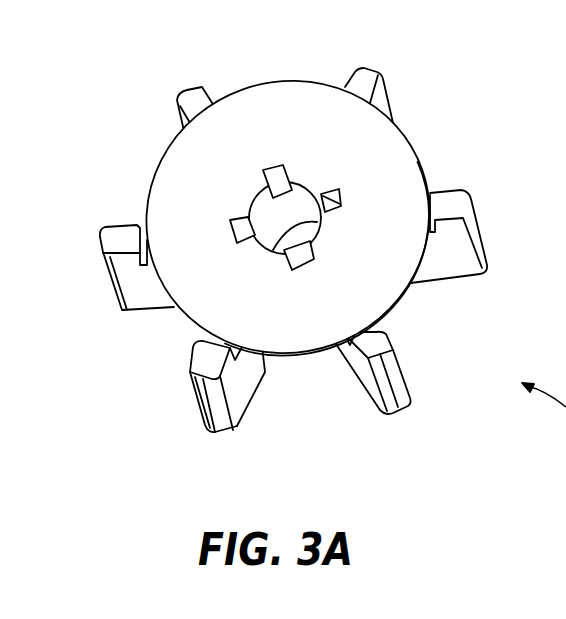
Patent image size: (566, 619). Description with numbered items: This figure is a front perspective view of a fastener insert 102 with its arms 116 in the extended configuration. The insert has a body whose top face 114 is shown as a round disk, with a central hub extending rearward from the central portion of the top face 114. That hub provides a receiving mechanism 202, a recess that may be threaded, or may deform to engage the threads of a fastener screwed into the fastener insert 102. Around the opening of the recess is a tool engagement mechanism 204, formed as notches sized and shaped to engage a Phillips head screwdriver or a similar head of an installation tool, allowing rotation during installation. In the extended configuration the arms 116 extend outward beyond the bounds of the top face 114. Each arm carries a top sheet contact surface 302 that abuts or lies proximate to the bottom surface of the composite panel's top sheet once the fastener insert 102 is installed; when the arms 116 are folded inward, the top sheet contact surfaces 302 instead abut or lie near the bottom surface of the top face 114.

The fastener insert 102 is at (301, 262).
The top face 114 is at (383, 130).
The arms 116 is at (247, 392).
The receiving mechanism 202 is at (270, 222).
The tool engagement mechanism 204 is at (330, 197).
The top sheet contact surface 302 is at (196, 342).